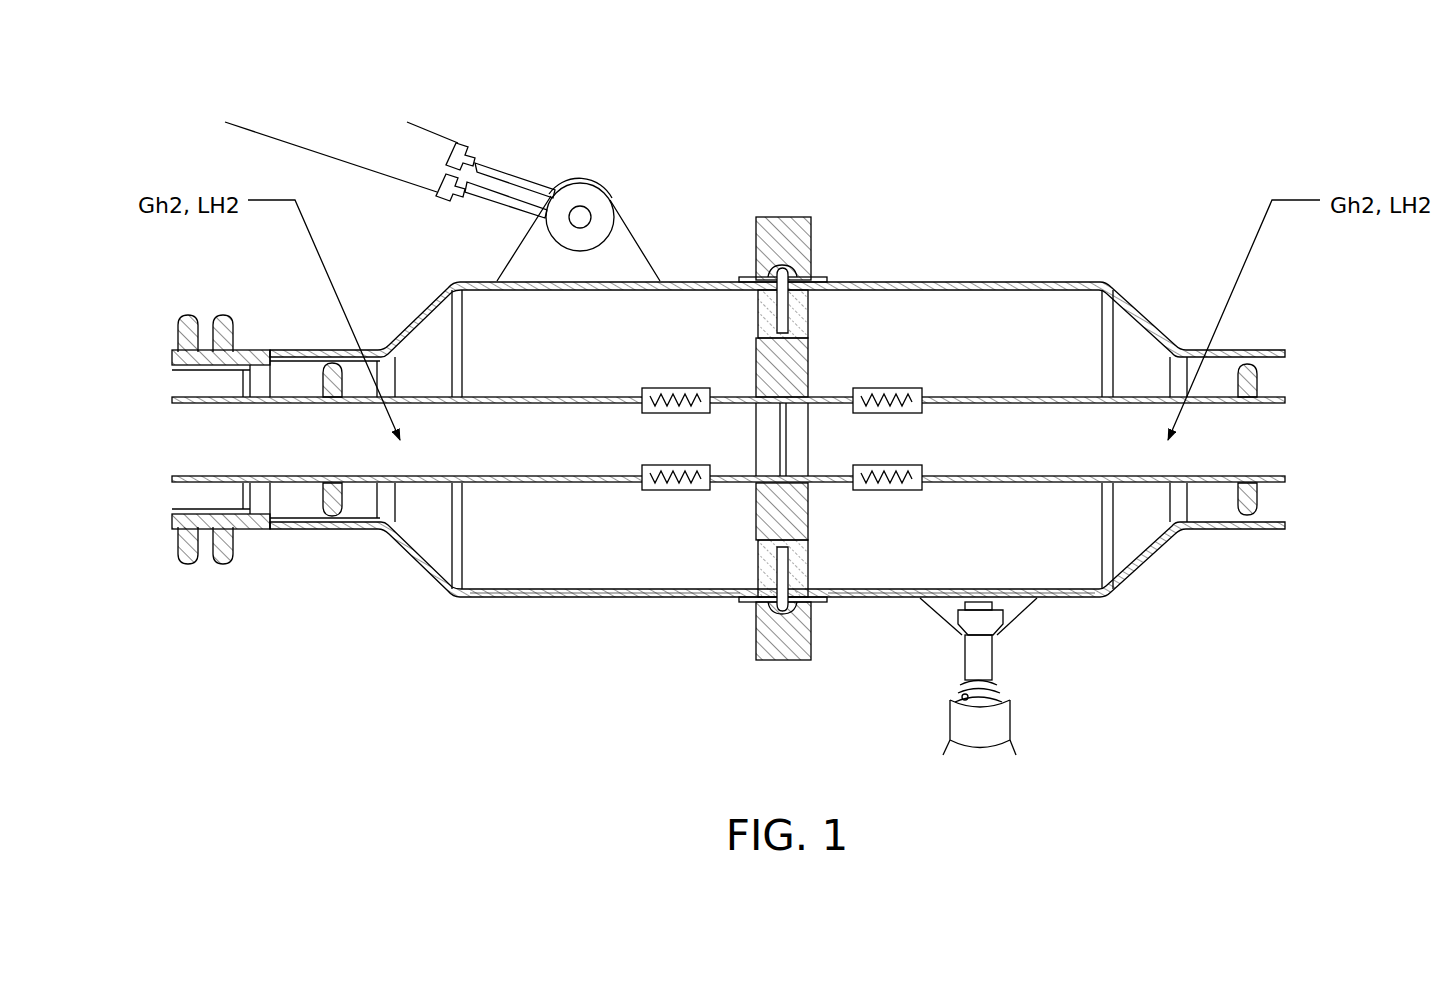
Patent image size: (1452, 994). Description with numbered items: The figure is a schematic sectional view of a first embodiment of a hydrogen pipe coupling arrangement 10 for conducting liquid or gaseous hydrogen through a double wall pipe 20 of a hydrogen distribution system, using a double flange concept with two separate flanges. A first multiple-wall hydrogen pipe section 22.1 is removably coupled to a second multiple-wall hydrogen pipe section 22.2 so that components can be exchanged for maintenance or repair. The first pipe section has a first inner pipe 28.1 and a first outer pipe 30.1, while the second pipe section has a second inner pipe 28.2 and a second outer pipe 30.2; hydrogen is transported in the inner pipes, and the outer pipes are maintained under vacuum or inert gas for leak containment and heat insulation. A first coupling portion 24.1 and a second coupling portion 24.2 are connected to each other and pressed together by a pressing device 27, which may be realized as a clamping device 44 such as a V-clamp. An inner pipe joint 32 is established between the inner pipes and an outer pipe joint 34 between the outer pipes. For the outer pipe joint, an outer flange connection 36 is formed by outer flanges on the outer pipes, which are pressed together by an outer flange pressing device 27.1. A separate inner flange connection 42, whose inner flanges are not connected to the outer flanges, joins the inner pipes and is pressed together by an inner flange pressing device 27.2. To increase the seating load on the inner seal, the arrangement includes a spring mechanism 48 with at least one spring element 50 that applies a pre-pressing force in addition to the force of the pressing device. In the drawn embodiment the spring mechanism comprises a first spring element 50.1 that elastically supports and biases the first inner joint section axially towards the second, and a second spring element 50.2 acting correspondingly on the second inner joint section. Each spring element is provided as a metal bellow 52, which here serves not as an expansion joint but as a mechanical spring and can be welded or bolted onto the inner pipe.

The hydrogen pipe coupling arrangement 10 is at (1098, 618).
The double wall pipe 20 is at (1218, 548).
The first multiple-wall hydrogen pipe section 22.1 is at (445, 606).
The second multiple-wall hydrogen pipe section 22.2 is at (1079, 233).
The first coupling portion 24.1 is at (771, 268).
The second coupling portion 24.2 is at (797, 268).
The pressing device 27 is at (801, 419).
The outer flange pressing device 27.1 is at (784, 216).
The inner flange pressing device 27.2 is at (802, 357).
The first inner pipe 28.1 is at (496, 483).
The second inner pipe 28.2 is at (1032, 397).
The first outer pipe 30.1 is at (563, 598).
The second outer pipe 30.2 is at (912, 598).
The inner pipe joint 32 is at (777, 476).
The outer pipe joint 34 is at (772, 612).
The outer flange connection 36 is at (800, 612).
The inner flange connection 42 is at (778, 404).
The clamping device 44 is at (786, 650).
The spring mechanism 48 is at (940, 366).
The spring element 50 is at (667, 510).
The first spring element 50.1 is at (677, 388).
The second spring element 50.2 is at (910, 388).
The metal bellow 52 is at (878, 490).